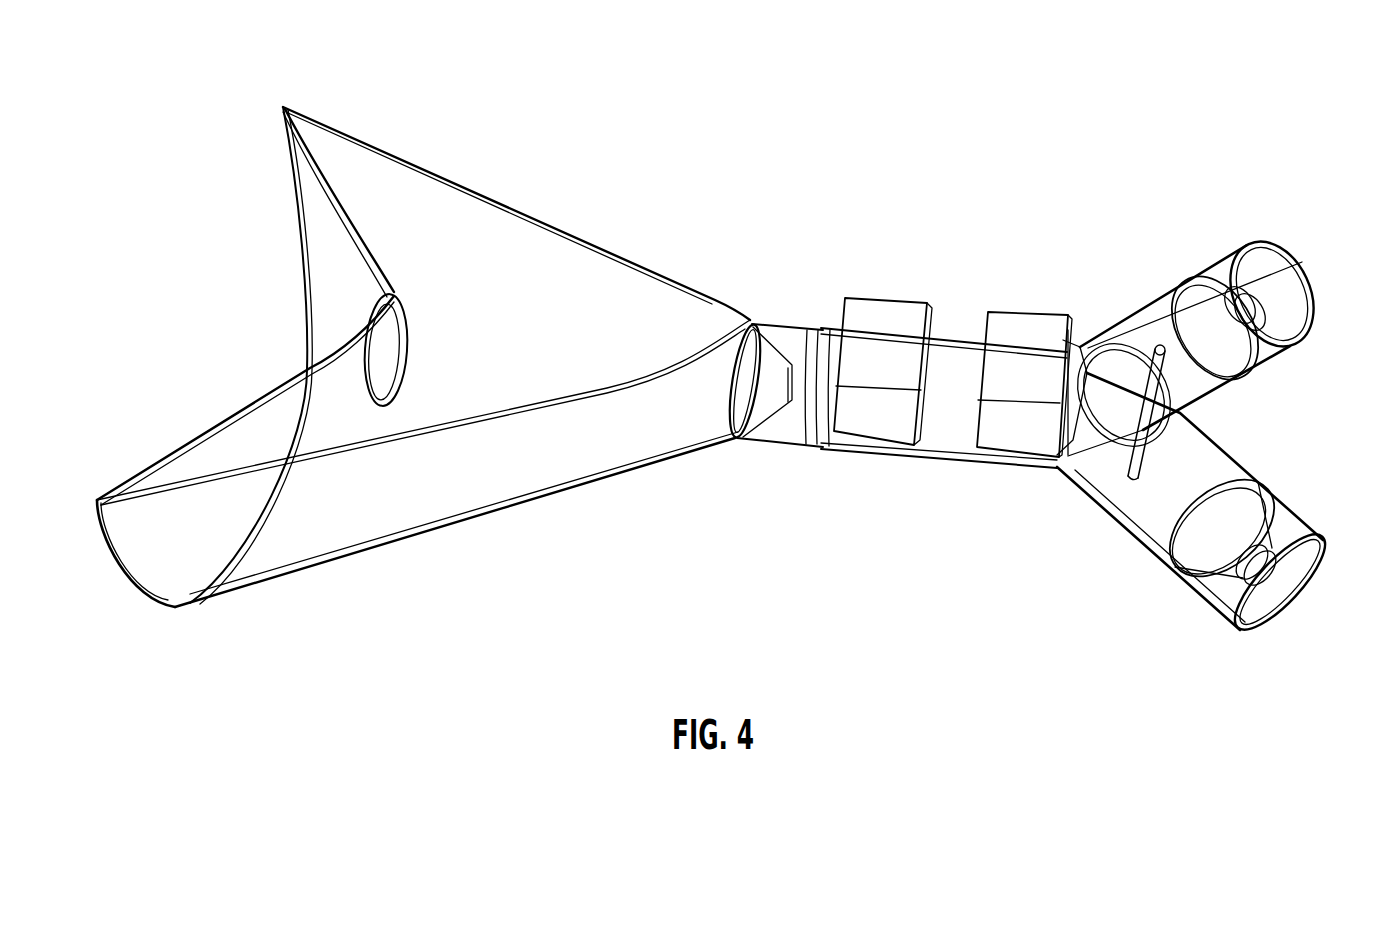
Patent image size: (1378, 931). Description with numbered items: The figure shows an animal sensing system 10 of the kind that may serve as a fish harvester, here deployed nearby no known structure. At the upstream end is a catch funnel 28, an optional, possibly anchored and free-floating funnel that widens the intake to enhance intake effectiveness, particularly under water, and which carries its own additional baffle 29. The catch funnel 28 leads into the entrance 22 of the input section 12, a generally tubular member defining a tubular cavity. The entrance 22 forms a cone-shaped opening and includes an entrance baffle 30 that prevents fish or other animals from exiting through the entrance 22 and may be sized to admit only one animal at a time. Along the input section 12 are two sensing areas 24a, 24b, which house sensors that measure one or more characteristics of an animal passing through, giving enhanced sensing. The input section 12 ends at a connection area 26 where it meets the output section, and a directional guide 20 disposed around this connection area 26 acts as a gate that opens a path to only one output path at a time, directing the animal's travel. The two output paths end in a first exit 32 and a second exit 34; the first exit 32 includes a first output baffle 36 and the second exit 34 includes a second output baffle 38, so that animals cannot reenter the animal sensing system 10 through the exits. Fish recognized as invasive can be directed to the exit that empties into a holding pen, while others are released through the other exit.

The animal sensing system 10 is at (1304, 53).
The catch funnel 28 is at (428, 193).
The additional baffle 29 is at (390, 296).
The entrance 22 is at (800, 343).
The entrance baffle 30 is at (818, 434).
The input section 12 is at (940, 431).
The first sensing area 24a is at (860, 418).
The second sensing area 24b is at (1043, 333).
The connection area 26 is at (1080, 347).
The directional guide 20 is at (1160, 375).
The first exit 32 is at (1268, 271).
The first output baffle 36 is at (1193, 302).
The second exit 34 is at (1280, 582).
The second output baffle 38 is at (1200, 553).